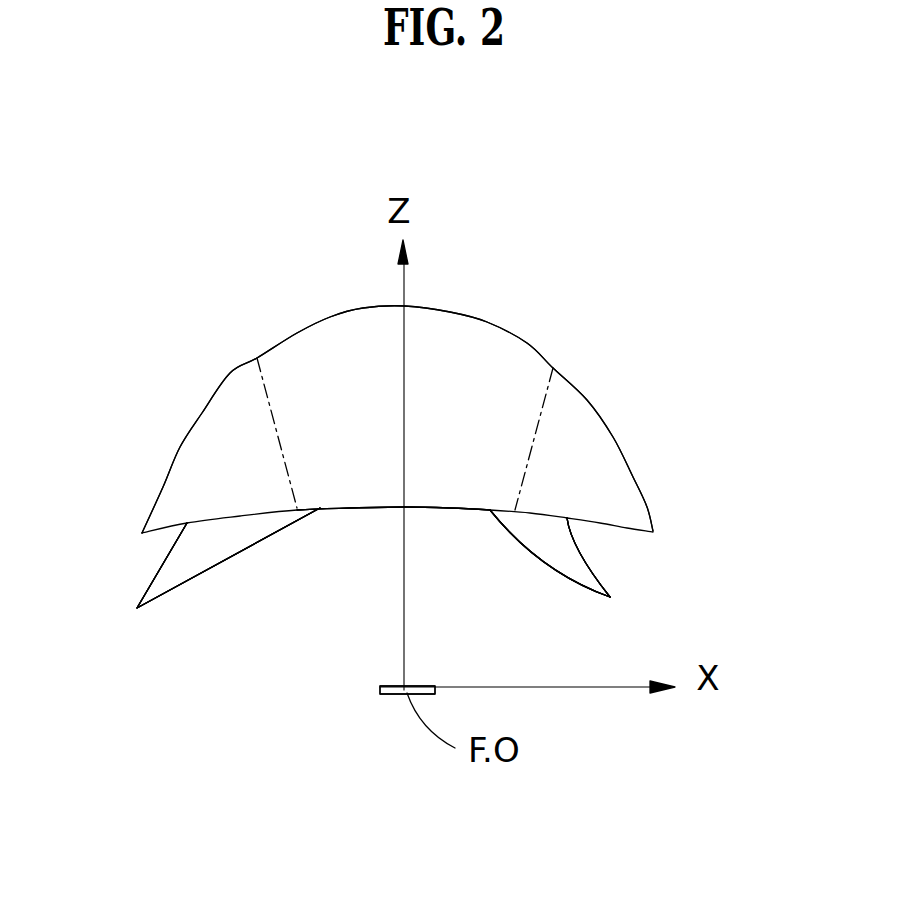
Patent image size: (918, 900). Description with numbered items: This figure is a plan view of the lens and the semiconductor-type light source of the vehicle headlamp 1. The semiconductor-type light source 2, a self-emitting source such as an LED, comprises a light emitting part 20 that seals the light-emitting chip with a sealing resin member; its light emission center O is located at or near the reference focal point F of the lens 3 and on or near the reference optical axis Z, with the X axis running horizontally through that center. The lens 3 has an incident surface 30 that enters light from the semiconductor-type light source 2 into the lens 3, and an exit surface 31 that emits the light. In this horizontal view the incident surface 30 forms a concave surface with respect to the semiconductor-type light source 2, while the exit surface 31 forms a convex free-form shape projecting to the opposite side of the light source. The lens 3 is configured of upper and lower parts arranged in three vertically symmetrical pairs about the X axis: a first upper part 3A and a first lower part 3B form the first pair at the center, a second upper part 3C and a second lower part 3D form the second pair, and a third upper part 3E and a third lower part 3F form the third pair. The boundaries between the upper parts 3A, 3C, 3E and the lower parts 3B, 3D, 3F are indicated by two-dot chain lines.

The vehicle headlamp 1 is at (222, 303).
The semiconductor-type light source 2 is at (360, 695).
The lens 3 is at (490, 318).
The light emitting part 20 is at (397, 695).
The incident surface 30 is at (630, 530).
The exit surface 31 is at (526, 343).
The first upper part 3A is at (415, 508).
The first lower part 3B is at (415, 508).
The second upper part 3C is at (379, 583).
The second lower part 3D is at (439, 583).
The third upper part 3E is at (469, 583).
The third lower part 3F is at (491, 583).